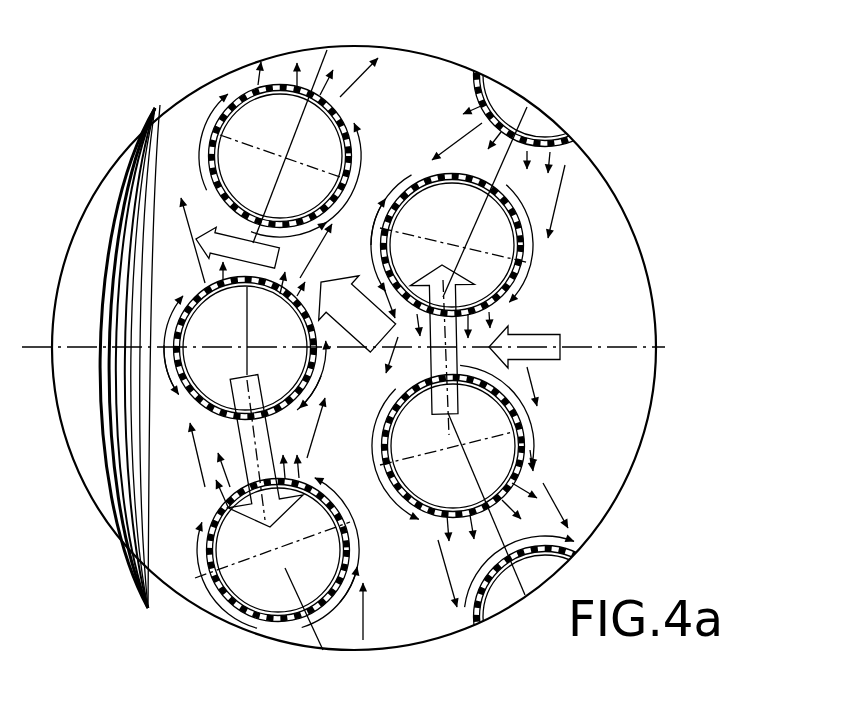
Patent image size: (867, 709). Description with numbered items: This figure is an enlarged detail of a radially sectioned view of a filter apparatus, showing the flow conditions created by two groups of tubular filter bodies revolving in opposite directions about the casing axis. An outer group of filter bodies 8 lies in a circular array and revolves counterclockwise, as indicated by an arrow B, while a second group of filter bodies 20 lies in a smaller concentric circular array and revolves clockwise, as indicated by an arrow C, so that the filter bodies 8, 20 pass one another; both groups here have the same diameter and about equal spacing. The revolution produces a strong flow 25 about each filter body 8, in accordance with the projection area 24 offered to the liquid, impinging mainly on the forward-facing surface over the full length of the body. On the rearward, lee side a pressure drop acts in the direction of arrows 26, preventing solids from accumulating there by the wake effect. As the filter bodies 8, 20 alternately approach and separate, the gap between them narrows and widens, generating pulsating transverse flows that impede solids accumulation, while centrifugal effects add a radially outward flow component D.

The filter body 8 is at (191, 409).
The filter body 20 is at (522, 268).
The projection area 24 is at (285, 161).
The flow 25 is at (203, 183).
The reduced pressure direction 26 is at (345, 88).
The arrow B is at (265, 441).
The arrow C is at (432, 416).
The radially outwards directed flow component D is at (360, 349).